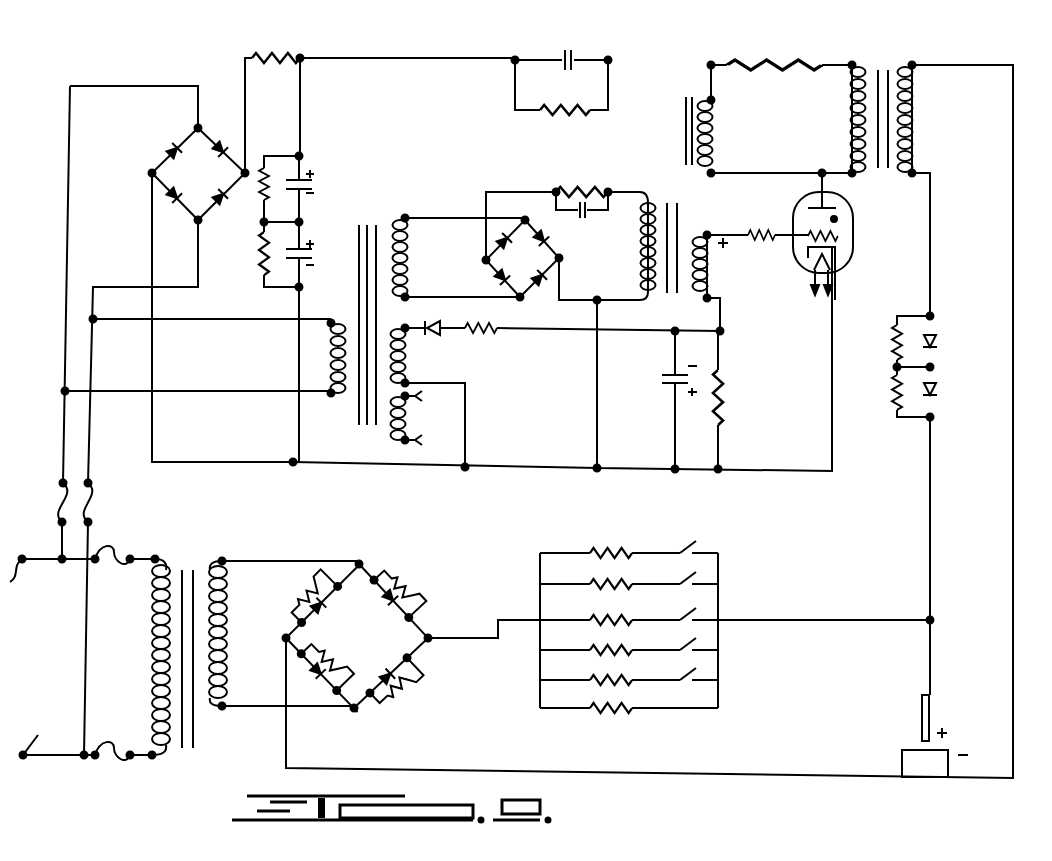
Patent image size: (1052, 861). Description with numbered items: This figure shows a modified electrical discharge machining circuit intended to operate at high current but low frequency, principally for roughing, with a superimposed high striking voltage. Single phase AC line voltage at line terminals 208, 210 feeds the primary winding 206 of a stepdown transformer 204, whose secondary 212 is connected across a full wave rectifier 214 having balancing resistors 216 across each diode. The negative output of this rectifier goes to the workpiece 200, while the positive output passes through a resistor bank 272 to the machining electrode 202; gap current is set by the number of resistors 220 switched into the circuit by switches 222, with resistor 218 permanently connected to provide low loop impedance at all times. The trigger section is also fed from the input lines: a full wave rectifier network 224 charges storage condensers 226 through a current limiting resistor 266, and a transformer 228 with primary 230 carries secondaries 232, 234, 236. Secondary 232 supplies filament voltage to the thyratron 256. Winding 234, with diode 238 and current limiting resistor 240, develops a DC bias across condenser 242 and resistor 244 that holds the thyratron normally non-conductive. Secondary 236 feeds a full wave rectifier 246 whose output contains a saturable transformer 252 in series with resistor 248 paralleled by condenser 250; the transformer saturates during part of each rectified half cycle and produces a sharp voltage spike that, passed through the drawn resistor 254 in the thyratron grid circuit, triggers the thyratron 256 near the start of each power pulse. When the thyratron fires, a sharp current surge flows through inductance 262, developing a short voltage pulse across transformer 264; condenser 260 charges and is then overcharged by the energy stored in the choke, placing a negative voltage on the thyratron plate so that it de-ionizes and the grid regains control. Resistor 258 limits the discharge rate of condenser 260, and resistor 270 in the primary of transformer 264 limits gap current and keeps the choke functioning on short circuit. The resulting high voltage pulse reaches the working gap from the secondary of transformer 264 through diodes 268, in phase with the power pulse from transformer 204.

The workpiece 200 is at (902, 764).
The machining electrode 202 is at (929, 705).
The stepdown transformer 204 is at (195, 750).
The primary winding 206 is at (160, 655).
The line terminal 208 is at (33, 581).
The line terminal 210 is at (34, 733).
The secondary 212 is at (228, 632).
The full wave rectifier 214 is at (375, 632).
The balancing resistor 216 is at (425, 582).
The resistor 218 is at (612, 715).
The resistor 220 is at (612, 550).
The switch 222 is at (690, 548).
The full wave rectifier network 224 is at (182, 165).
The storage condenser 226 is at (308, 222).
The transformer 228 is at (358, 420).
The primary 230 is at (331, 352).
The secondary 232 is at (404, 418).
The winding 234 is at (412, 372).
The secondary 236 is at (404, 276).
The diode 238 is at (436, 326).
The current limiting resistor 240 is at (498, 330).
The condenser 242 is at (668, 388).
The resistor 244 is at (722, 412).
The full wave rectifier 246 is at (562, 264).
The resistor 248 is at (578, 192).
The condenser 250 is at (582, 222).
The saturable transformer 252 is at (680, 225).
The resistor 254 is at (750, 245).
The thyratron 256 is at (835, 240).
The resistor 258 is at (590, 120).
The condenser 260 is at (572, 50).
The inductance 262 is at (718, 158).
The transformer 264 is at (885, 70).
The current limiting resistor 266 is at (272, 53).
The diode 268 is at (935, 367).
The resistor 270 is at (800, 32).
The resistor bank 272 is at (644, 629).